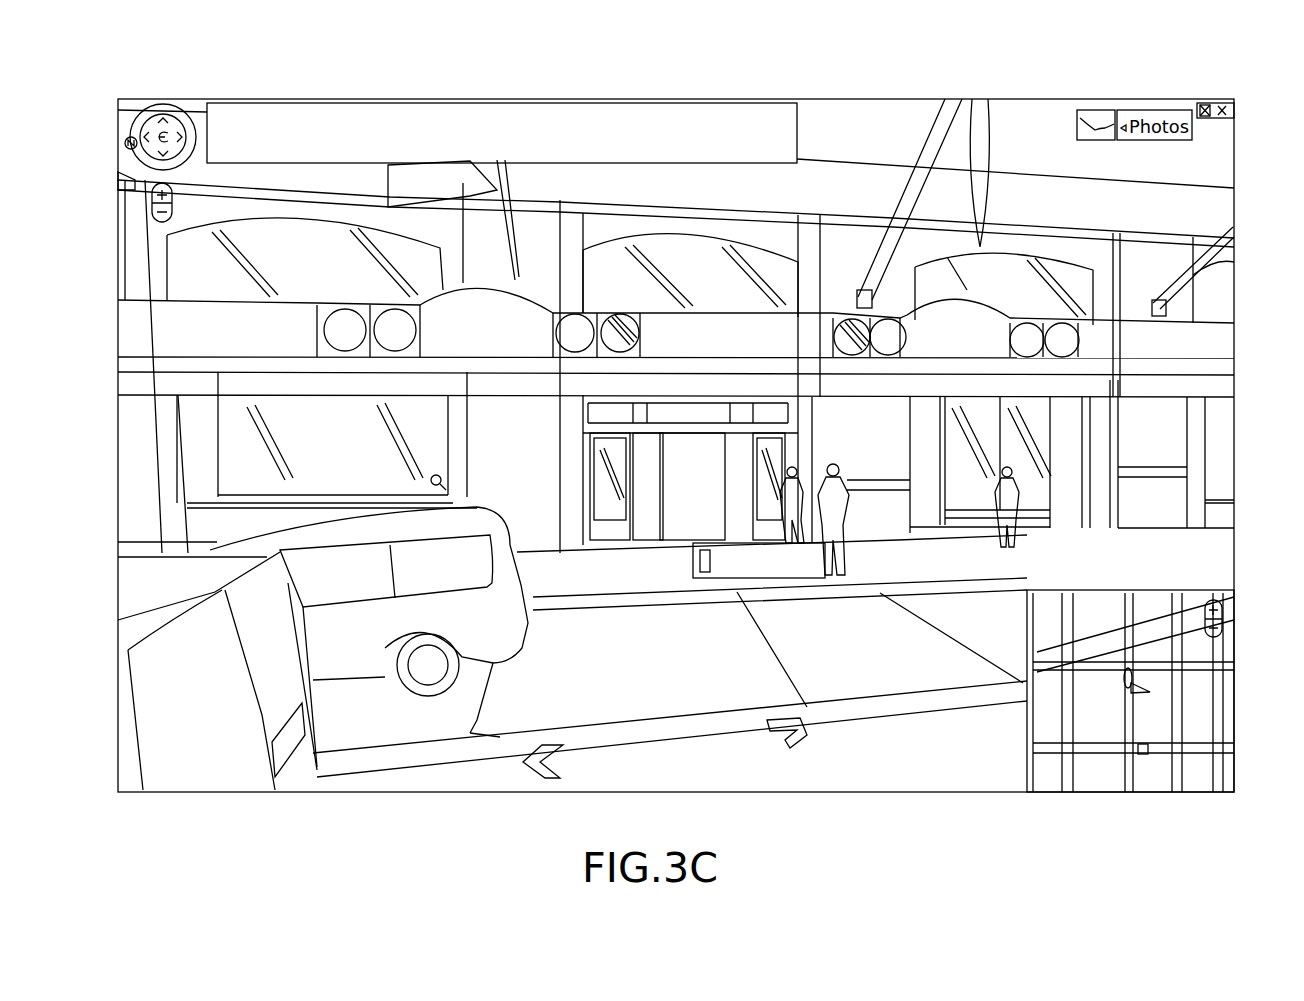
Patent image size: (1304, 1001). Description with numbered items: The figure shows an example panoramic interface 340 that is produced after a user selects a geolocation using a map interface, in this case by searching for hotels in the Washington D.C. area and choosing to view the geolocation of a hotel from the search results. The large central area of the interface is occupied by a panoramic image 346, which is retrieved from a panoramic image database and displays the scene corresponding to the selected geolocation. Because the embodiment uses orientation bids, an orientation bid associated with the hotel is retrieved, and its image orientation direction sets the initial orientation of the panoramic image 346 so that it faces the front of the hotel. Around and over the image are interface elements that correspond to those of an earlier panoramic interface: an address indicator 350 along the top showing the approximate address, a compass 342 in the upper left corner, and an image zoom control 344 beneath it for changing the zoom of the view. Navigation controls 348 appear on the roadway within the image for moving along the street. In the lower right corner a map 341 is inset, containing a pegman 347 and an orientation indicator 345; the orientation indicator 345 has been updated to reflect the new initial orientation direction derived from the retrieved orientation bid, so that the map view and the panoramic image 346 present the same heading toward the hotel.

The panoramic interface 340 is at (1292, 58).
The map 341 is at (1045, 793).
The compass 342 is at (150, 118).
The image zoom control 344 is at (118, 190).
The orientation indicator 345 is at (1128, 688).
The panoramic image 346 is at (998, 98).
The pegman 347 is at (1135, 670).
The navigation controls 348 is at (546, 792).
The address indicator 350 is at (320, 108).